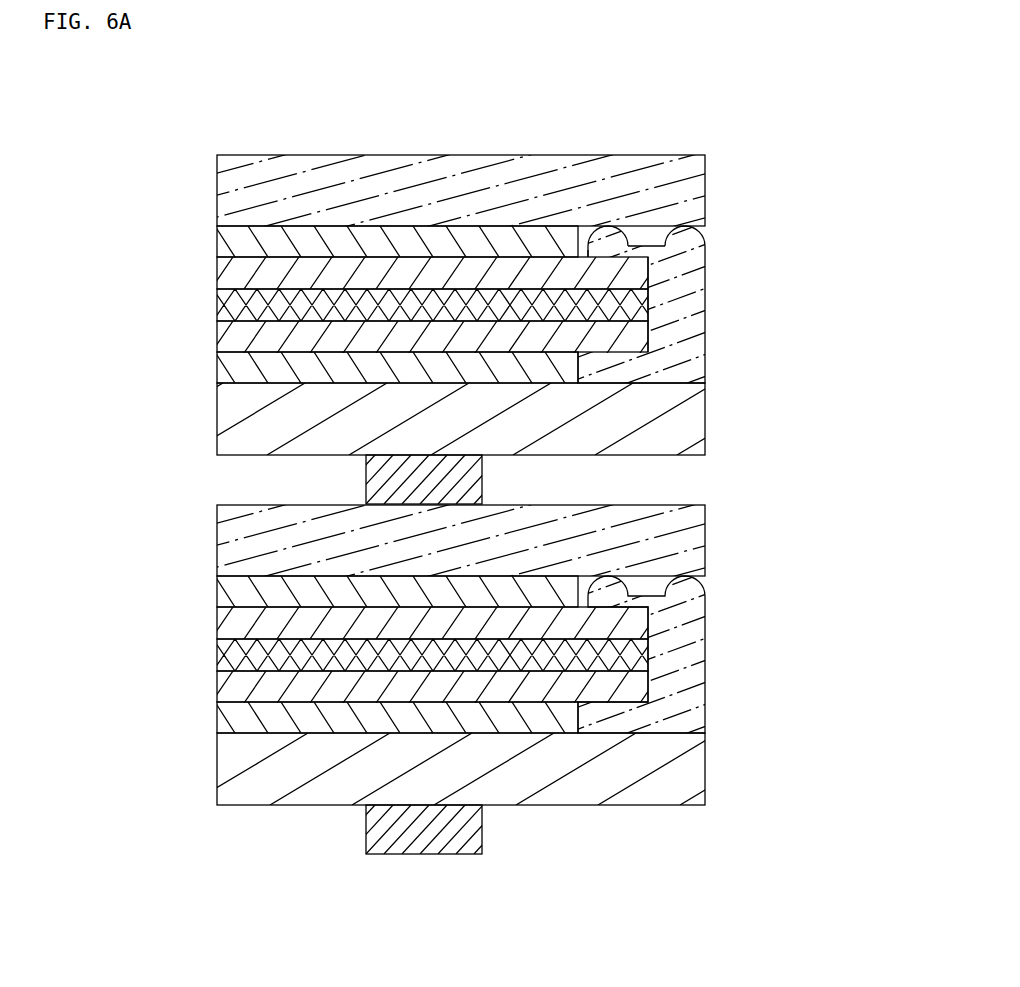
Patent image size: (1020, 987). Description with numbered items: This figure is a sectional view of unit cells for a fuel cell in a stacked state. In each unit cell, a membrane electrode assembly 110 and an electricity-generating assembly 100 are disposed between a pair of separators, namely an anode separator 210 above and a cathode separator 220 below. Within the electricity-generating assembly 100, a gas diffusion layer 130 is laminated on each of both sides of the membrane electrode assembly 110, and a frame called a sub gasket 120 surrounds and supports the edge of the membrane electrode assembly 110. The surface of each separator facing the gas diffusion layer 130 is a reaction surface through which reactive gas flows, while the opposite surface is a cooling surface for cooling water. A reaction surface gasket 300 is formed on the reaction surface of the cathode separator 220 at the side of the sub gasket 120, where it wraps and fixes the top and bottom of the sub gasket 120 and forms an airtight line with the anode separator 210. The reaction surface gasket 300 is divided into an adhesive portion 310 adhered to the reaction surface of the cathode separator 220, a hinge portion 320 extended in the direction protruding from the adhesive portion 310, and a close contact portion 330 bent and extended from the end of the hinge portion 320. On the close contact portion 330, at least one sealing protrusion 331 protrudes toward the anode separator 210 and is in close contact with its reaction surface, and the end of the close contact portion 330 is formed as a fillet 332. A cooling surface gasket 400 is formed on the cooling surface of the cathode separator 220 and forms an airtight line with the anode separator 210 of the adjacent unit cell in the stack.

The electricity-generating assembly 100 is at (118, 240).
The membrane electrode assembly 110 is at (232, 306).
The sub gasket 120 is at (232, 275).
The gas diffusion layer 130 is at (232, 241).
The anode separator 210 is at (232, 195).
The cathode separator 220 is at (232, 418).
The reaction surface gasket 300 is at (694, 417).
The adhesive portion 310 is at (677, 367).
The hinge portion 320 is at (718, 258).
The close contact portion 330 is at (658, 158).
The sealing protrusion 331 is at (612, 232).
The fillet 332 is at (586, 250).
The cooling surface gasket 400 is at (467, 485).